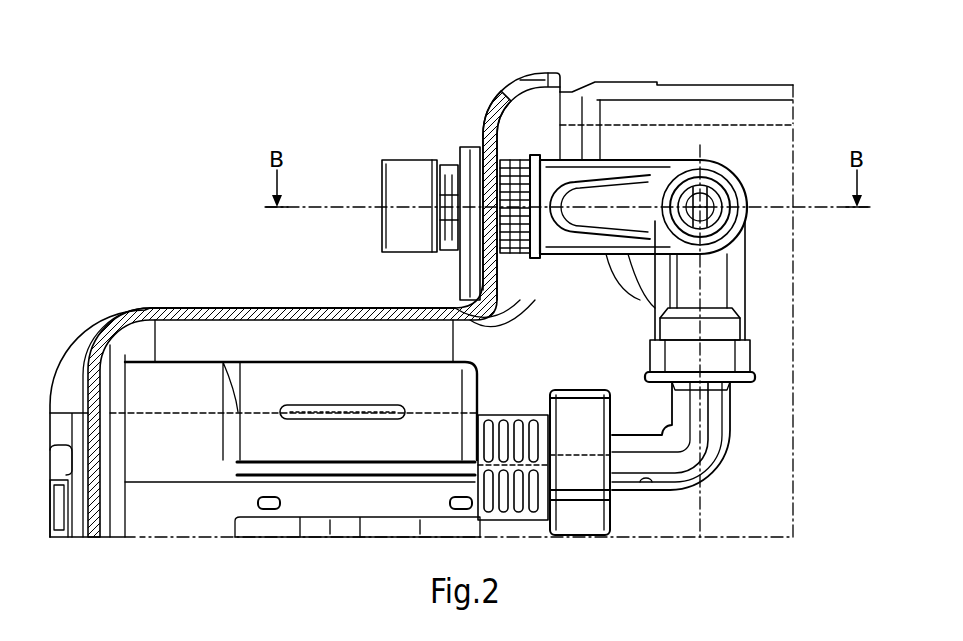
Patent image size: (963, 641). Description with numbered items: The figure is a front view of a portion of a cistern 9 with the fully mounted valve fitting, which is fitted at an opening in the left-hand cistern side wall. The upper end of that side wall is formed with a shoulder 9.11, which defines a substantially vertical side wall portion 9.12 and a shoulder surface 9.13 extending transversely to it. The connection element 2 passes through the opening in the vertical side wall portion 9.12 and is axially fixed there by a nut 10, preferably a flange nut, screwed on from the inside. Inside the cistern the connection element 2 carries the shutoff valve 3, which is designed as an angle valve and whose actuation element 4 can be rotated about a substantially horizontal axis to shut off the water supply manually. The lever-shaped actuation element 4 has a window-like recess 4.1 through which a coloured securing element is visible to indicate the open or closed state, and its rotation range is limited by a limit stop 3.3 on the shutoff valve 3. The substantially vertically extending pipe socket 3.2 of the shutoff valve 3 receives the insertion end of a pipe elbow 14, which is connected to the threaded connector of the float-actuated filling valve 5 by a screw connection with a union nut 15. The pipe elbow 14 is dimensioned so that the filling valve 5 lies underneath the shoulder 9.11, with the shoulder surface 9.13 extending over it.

The connection element 2 is at (408, 187).
The shutoff valve 3 is at (732, 270).
The pipe socket 3.2 is at (740, 328).
The limit stop 3.3 is at (737, 170).
The actuation element 4 is at (623, 195).
The window-like recess 4.1 is at (553, 212).
The float-actuated filling valve 5 is at (270, 387).
The cistern 9 is at (95, 350).
The shoulder 9.11 is at (350, 307).
The vertical side wall portion 9.12 is at (480, 130).
The shoulder surface 9.13 is at (277, 307).
The nut 10 is at (512, 165).
The pipe elbow 14 is at (693, 467).
The union nut 15 is at (583, 473).